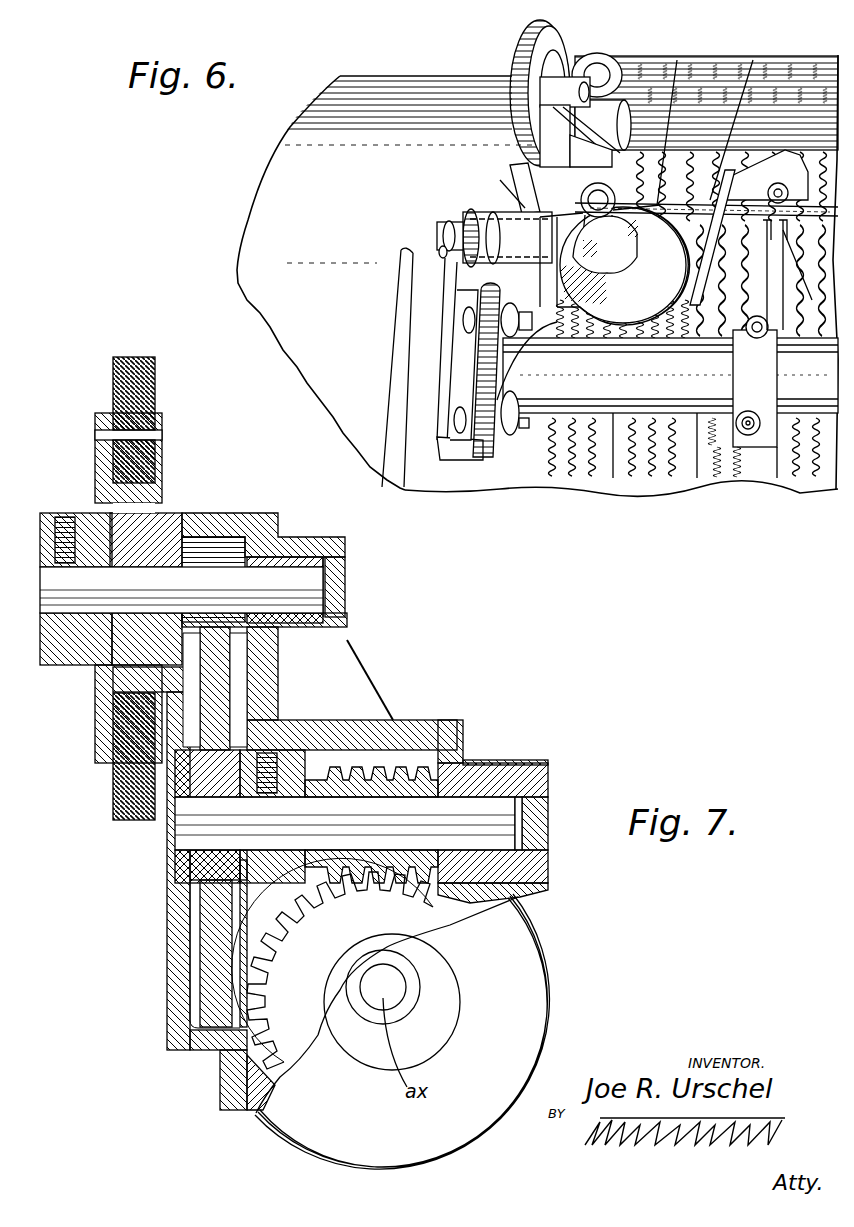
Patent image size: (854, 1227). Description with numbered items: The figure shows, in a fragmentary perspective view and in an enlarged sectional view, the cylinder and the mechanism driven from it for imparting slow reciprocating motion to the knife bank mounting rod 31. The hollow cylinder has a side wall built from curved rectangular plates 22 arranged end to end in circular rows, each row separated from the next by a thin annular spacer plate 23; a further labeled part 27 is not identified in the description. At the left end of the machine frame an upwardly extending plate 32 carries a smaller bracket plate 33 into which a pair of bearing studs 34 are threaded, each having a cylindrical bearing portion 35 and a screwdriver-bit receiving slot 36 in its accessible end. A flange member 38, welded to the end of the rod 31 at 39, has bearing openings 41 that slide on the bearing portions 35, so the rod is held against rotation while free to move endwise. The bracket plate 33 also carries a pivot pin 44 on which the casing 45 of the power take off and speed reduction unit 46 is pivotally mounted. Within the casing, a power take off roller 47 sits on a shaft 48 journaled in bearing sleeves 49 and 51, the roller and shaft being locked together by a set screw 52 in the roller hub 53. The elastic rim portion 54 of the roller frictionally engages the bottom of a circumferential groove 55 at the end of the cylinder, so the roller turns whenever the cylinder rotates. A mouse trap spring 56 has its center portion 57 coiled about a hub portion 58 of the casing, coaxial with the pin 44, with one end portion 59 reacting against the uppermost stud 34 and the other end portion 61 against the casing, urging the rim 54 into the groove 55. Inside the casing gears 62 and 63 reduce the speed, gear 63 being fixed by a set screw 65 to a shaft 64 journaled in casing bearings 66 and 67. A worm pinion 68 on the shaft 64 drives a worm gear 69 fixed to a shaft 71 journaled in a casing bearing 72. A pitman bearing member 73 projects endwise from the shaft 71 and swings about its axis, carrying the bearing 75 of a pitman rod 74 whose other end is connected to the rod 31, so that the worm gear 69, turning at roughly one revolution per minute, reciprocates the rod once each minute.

In FIG. 6, the curved rectangular plates 22 is at (602, 472).
In FIG. 6, the annular spacer plate 23 is at (615, 470).
In FIG. 6, the strip fibers 27 is at (734, 62).
In FIG. 6, the knife bank mounting rod 31 is at (670, 375).
In FIG. 6, the upwardly extending plate 32 is at (398, 299).
In FIG. 6, the bracket plate 33 is at (440, 251).
In FIG. 6, the bearing studs 34 is at (528, 332).
In FIG. 6, the cylindrical bearing portions 35 is at (510, 332).
In FIG. 6, the screwdriver-bit receiving slots 36 is at (533, 322).
In FIG. 6, the flange member 38 is at (483, 353).
In FIG. 6, the weld 39 is at (497, 400).
In FIG. 6, the bearing openings 41 is at (485, 490).
In FIG. 6, the pivot pin 44 is at (440, 240).
In FIG. 6, the casing 45 is at (652, 190).
In FIG. 7, the casing 45 is at (318, 545).
In FIG. 6, the power take off and speed reduction unit 46 is at (506, 188).
In FIG. 7, the power take off and speed reduction unit 46 is at (229, 503).
In FIG. 6, the power take off roller 47 is at (508, 43).
In FIG. 7, the power take off roller 47 is at (88, 461).
In FIG. 7, the shaft 48 is at (181, 590).
In FIG. 7, the bearing sleeve 49 is at (165, 555).
In FIG. 7, the bearing sleeve 51 is at (285, 558).
In FIG. 7, the set screw 52 is at (65, 518).
In FIG. 7, the hub 53 is at (60, 665).
In FIG. 7, the rim portion 54 is at (112, 358).
In FIG. 6, the circumferential groove 55 is at (606, 55).
In FIG. 6, the mouse trap spring 56 is at (497, 172).
In FIG. 6, the center portion 57 is at (455, 220).
In FIG. 6, the hub portion 58 is at (474, 225).
In FIG. 6, the end portion 59 is at (463, 327).
In FIG. 6, the end portion 61 is at (575, 122).
In FIG. 7, the gear 62 is at (236, 548).
In FIG. 7, the gear 63 is at (192, 1008).
In FIG. 7, the shaft 64 is at (348, 823).
In FIG. 7, the set screw 65 is at (272, 757).
In FIG. 7, the casing bearing 66 is at (166, 882).
In FIG. 7, the casing bearing 67 is at (496, 790).
In FIG. 7, the worm pinion 68 is at (402, 768).
In FIG. 7, the worm gear 69 is at (357, 939).
In FIG. 7, the shaft 71 is at (405, 1017).
In FIG. 7, the casing bearing 72 is at (425, 993).
In FIG. 6, the pitman bearing member 73 is at (600, 196).
In FIG. 7, the pitman bearing member 73 is at (403, 980).
In FIG. 6, the pitman rod 74 is at (660, 216).
In FIG. 6, the bearing 75 is at (607, 235).